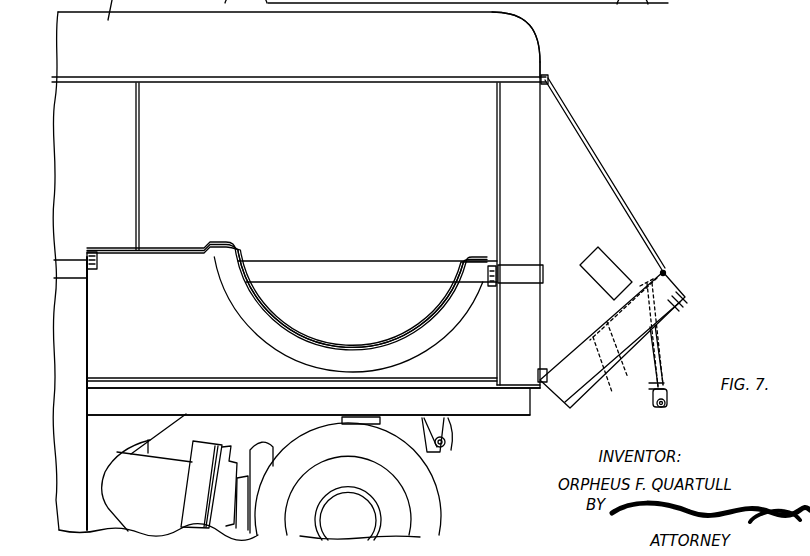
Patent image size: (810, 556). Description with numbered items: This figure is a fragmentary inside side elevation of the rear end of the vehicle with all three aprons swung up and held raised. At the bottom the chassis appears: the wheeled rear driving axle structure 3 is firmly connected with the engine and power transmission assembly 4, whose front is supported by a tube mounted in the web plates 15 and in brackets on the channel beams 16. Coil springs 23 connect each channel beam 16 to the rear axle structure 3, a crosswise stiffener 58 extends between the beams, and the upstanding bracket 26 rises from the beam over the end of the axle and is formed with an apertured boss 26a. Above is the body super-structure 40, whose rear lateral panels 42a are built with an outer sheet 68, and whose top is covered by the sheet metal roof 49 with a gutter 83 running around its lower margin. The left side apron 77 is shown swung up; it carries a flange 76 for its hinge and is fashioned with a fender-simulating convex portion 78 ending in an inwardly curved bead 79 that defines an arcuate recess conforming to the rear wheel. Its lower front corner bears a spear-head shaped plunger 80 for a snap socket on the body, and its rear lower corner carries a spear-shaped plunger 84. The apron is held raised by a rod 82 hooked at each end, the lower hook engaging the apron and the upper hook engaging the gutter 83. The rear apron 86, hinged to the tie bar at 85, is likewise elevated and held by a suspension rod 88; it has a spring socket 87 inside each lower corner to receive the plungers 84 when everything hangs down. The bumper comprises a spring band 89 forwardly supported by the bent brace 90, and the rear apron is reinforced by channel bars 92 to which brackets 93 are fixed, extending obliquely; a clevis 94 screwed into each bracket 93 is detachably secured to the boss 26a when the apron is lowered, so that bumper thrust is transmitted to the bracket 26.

The rear driving axle structure 3 is at (348, 481).
The engine and power transmission assembly 4 is at (205, 456).
The web plate 15 is at (118, 452).
The channel beam 16 is at (262, 402).
The coil spring 23 is at (380, 424).
The upstanding bracket 26 is at (425, 420).
The apertured boss 26a is at (446, 445).
The super-structure of the composite body 40 is at (391, 144).
The rear lateral panel 42a is at (325, 209).
The sheet metal roof 49 is at (540, 40).
The crosswise stiffener 58 is at (460, 422).
The outer sheet 68 is at (299, 126).
The flange 76 is at (152, 378).
The side apron 77 is at (173, 262).
The fender-simulating convex portion 78 is at (285, 337).
The inwardly curved bead 79 is at (355, 347).
The spear-head shaped plunger 80 is at (88, 265).
The rod 82 is at (140, 137).
The gutter 83 is at (214, 77).
The spear-shaped plunger 84 is at (490, 286).
The hinge 85 is at (548, 374).
The rear apron 86 is at (664, 290).
The spring socket 87 is at (686, 303).
The suspension rod 88 is at (604, 166).
The spring band 89 is at (593, 258).
The bent brace 90 is at (636, 292).
The channel bar 92 is at (610, 364).
The bracket 93 is at (658, 347).
The clevis 94 is at (665, 404).